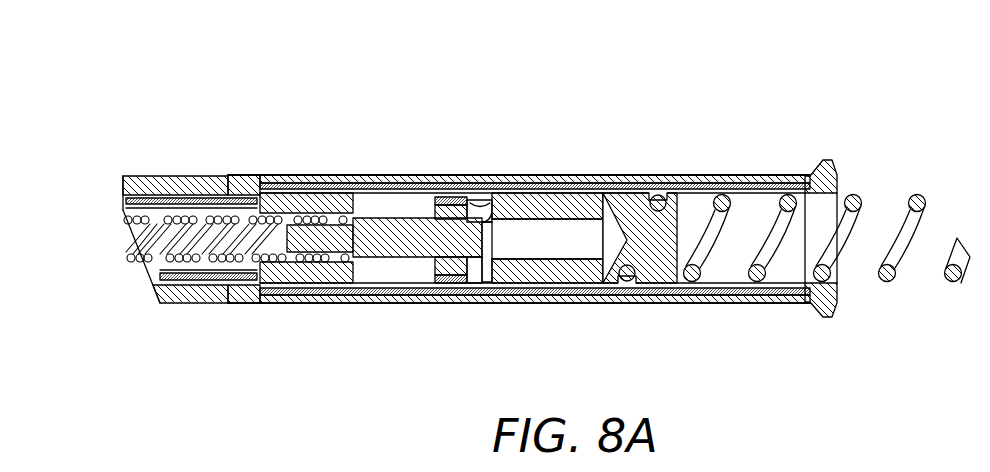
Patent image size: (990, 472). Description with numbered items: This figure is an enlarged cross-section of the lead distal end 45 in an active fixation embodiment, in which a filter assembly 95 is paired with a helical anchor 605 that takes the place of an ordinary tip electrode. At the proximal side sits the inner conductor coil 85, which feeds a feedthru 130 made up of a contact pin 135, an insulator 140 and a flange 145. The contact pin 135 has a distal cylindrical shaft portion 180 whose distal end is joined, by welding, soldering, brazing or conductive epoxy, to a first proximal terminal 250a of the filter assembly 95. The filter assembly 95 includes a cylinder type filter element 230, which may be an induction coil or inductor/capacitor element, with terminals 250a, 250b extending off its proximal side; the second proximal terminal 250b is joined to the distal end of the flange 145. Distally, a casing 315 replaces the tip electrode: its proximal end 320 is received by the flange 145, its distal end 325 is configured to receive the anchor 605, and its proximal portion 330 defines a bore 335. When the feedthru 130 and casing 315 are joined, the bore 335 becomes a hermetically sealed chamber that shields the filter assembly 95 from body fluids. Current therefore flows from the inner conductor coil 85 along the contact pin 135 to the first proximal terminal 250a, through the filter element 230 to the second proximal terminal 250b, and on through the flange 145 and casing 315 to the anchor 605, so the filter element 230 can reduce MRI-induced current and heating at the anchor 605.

The lead distal end 45 is at (508, 78).
The inner conductor coil 85 is at (145, 262).
The filter assembly 95 is at (562, 145).
The feedthru 130 is at (434, 163).
The contact pin 135 is at (333, 197).
The insulator 140 is at (380, 222).
The flange 145 is at (440, 178).
The distal cylindrical shaft portion 180 is at (373, 252).
The filter element 230 is at (574, 203).
The first proximal terminal 250a is at (493, 262).
The second proximal terminal 250b is at (483, 199).
The casing 315 is at (632, 200).
The proximal end of the casing 320 is at (515, 180).
The distal end of the casing 325 is at (672, 200).
The proximal portion of the casing 330 is at (450, 170).
The bore 335 is at (476, 265).
The anchor 605 is at (920, 194).